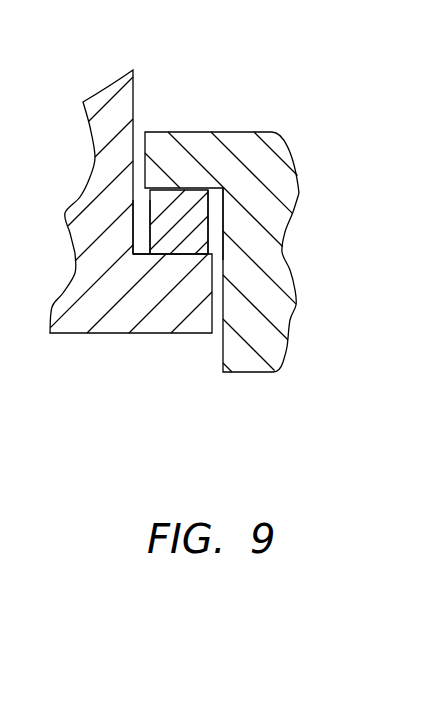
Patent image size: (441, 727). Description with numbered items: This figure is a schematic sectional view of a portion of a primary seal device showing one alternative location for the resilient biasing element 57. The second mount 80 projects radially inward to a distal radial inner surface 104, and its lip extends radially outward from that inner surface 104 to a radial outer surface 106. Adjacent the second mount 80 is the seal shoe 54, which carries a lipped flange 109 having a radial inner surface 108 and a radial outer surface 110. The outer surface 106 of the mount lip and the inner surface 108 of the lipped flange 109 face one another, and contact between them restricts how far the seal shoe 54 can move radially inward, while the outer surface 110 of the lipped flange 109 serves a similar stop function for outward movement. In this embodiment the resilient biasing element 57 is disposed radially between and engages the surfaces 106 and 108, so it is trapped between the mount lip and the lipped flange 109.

The second mount 80 is at (78, 112).
The distal radial inner surface 104 is at (145, 334).
The radial outer surface 106 is at (140, 253).
The radial outer surface 110 is at (207, 131).
The resilient biasing element 57 is at (188, 207).
The lipped flange 109 is at (149, 297).
The seal shoe 54 is at (289, 272).
The radial inner surface 108 is at (222, 191).